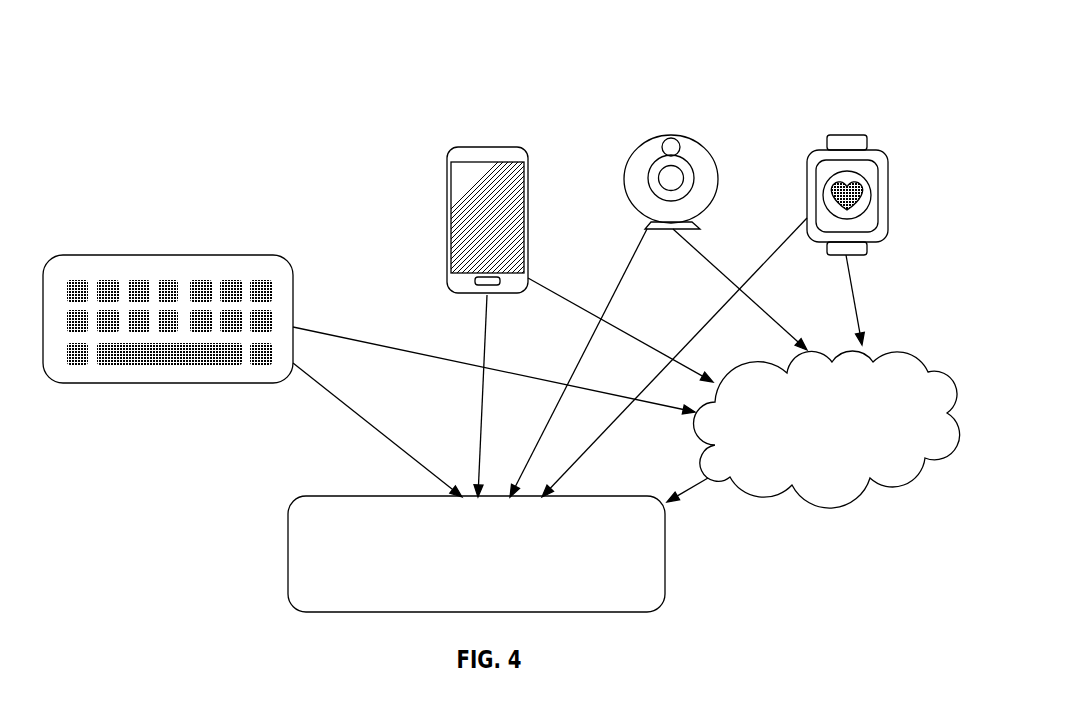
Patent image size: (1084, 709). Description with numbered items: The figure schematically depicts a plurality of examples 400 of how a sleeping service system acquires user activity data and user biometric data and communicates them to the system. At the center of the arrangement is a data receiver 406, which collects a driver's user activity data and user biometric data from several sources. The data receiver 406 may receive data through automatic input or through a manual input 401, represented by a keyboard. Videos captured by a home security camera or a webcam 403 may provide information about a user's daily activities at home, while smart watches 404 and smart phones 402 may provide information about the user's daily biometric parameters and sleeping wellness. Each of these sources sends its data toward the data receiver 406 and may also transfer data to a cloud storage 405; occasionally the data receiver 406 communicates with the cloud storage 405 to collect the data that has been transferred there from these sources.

The plurality of examples 400 is at (258, 183).
The manual input 401 is at (117, 250).
The smart phones 402 is at (489, 145).
The webcam 403 is at (671, 130).
The smart watches 404 is at (848, 133).
The cloud storage 405 is at (887, 493).
The data receiver 406 is at (337, 494).